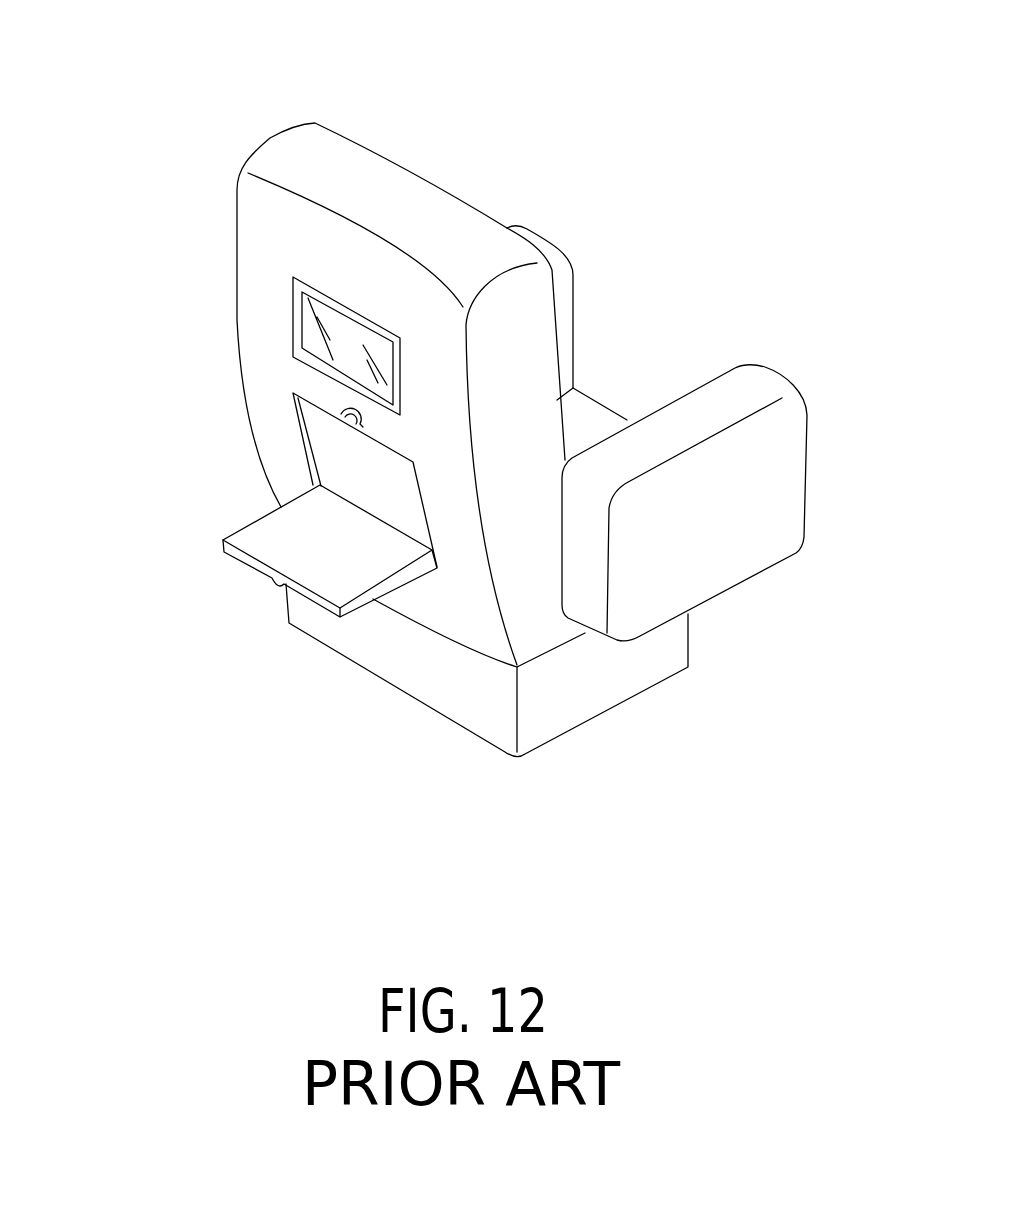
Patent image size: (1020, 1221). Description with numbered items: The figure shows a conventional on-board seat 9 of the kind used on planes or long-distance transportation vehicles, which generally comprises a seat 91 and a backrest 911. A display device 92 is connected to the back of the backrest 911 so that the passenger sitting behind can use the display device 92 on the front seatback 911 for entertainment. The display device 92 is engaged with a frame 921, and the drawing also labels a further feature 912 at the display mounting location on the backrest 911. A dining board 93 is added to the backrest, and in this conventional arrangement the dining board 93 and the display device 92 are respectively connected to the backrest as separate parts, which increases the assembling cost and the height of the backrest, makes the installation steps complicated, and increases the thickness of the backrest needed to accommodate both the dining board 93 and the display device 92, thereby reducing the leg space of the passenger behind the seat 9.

The on-board seat 9 is at (287, 103).
The seat 91 is at (580, 418).
The backrest 911 is at (290, 250).
The display device 92 is at (307, 325).
The pivot hole of backrest 912 is at (345, 378).
The frame 921 is at (345, 378).
The dining board 93 is at (252, 525).